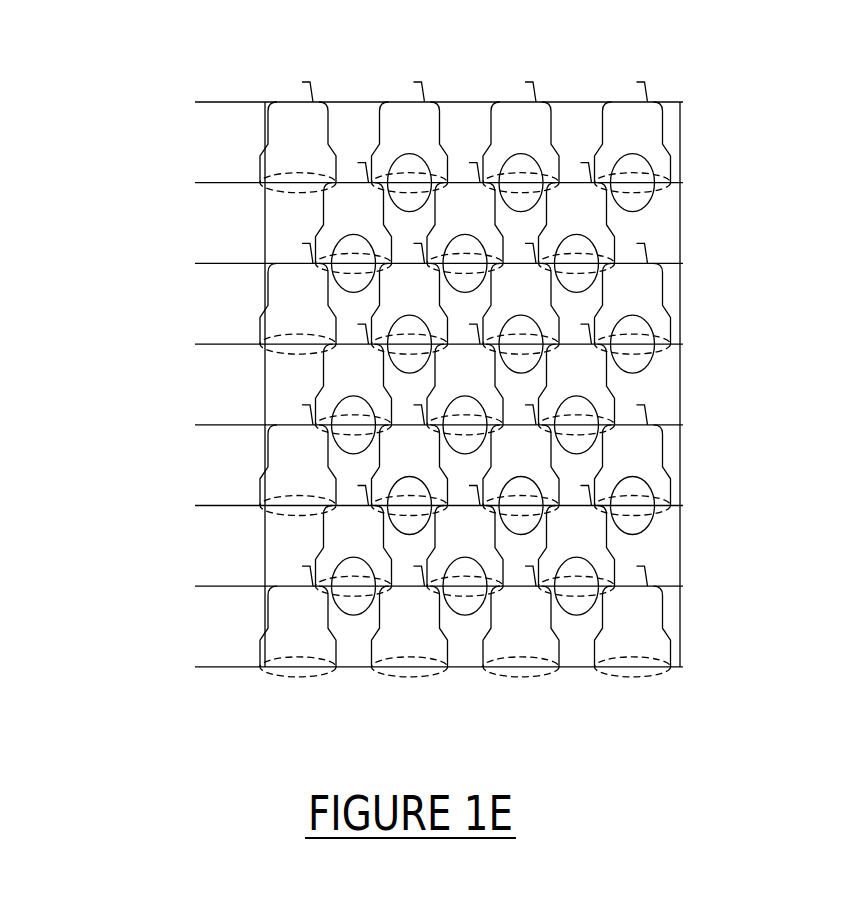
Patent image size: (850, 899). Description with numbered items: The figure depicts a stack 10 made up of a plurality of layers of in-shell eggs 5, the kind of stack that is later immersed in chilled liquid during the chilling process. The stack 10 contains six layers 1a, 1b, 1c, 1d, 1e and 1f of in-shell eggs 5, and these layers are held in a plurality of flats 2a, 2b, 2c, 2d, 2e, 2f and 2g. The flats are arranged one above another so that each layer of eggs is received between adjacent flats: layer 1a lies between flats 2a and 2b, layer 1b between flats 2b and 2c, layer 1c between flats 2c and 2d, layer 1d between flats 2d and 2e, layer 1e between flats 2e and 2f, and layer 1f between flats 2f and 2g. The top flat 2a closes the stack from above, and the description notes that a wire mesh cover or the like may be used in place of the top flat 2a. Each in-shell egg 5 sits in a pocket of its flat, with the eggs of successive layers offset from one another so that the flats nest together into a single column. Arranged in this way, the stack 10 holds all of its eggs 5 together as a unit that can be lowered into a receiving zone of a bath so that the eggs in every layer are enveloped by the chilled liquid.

The stack 10 is at (205, 73).
The in-shell egg 5 is at (637, 157).
The layer 1a is at (463, 181).
The layer 1b is at (463, 262).
The layer 1c is at (463, 343).
The layer 1d is at (463, 423).
The layer 1e is at (463, 504).
The layer 1f is at (463, 585).
The top flat 2a is at (438, 147).
The flat 2b is at (404, 228).
The flat 2c is at (432, 308).
The flat 2d is at (404, 389).
The flat 2e is at (432, 470).
The flat 2f is at (404, 551).
The flat 2g is at (438, 621).